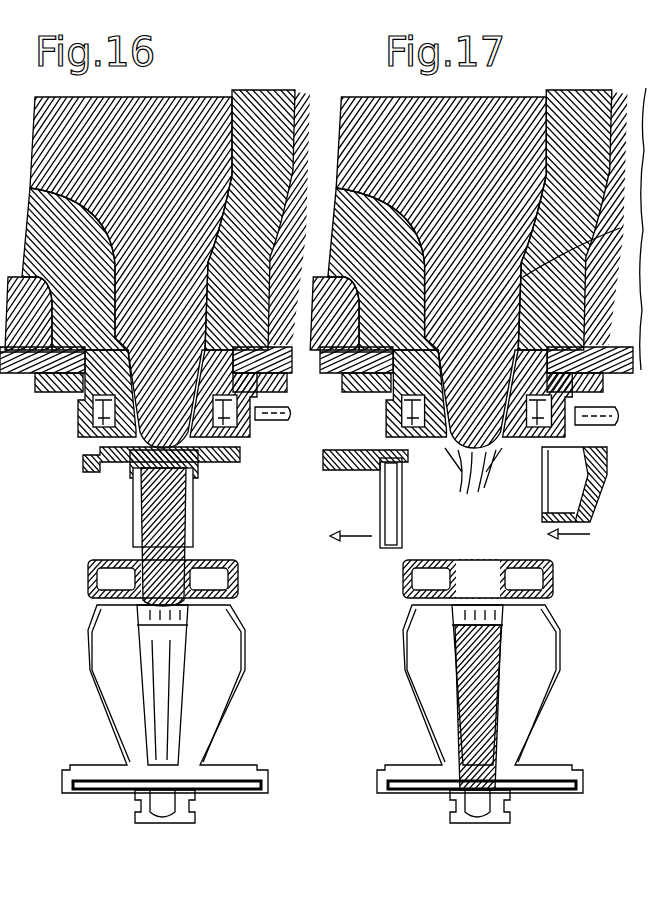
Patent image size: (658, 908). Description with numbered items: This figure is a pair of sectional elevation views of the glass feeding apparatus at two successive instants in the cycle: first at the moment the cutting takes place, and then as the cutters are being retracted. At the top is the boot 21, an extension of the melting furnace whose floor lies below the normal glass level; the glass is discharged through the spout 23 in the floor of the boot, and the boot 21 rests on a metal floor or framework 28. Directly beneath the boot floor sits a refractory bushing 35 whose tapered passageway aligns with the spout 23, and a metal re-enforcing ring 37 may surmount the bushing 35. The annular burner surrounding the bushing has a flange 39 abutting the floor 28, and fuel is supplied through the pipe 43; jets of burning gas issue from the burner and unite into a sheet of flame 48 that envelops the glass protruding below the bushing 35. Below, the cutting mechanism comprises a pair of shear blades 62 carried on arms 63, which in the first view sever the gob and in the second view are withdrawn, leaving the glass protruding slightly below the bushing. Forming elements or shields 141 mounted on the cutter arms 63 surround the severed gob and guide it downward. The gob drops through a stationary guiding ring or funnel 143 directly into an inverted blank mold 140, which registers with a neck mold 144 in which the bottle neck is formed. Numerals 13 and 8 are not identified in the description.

In FIG. 16, the boot 21 is at (311, 99).
In FIG. 17, the boot 21 is at (617, 95).
In FIG. 16, the insert block 13 is at (112, 303).
In FIG. 17, the insert block 13 is at (348, 385).
In FIG. 16, the support plate 8 is at (28, 376).
In FIG. 17, the support plate 8 is at (485, 370).
In FIG. 16, the metal re-enforcing ring 37 is at (284, 362).
In FIG. 16, the flange 39 is at (48, 393).
In FIG. 17, the flange 39 is at (598, 390).
In FIG. 16, the pipe 43 is at (290, 414).
In FIG. 17, the pipe 43 is at (618, 424).
In FIG. 16, the bushing 35 is at (100, 438).
In FIG. 17, the bushing 35 is at (405, 406).
In FIG. 16, the arms 63 is at (95, 470).
In FIG. 17, the arms 63 is at (338, 470).
In FIG. 16, the shear blades 62 is at (116, 480).
In FIG. 17, the shear blades 62 is at (403, 462).
In FIG. 16, the forming elements or shields 141 is at (378, 510).
In FIG. 17, the forming elements or shields 141 is at (475, 700).
In FIG. 16, the guiding rings or funnels 143 is at (330, 578).
In FIG. 17, the guiding rings or funnels 143 is at (403, 568).
In FIG. 16, the blank molds 140 is at (225, 650).
In FIG. 17, the blank molds 140 is at (525, 703).
In FIG. 16, the neck molds 144 is at (180, 808).
In FIG. 17, the neck molds 144 is at (495, 808).
In FIG. 17, the spout 23 is at (580, 244).
In FIG. 17, the metal floor or framework 28 is at (600, 365).
In FIG. 17, the sheet of flame 48 is at (486, 470).